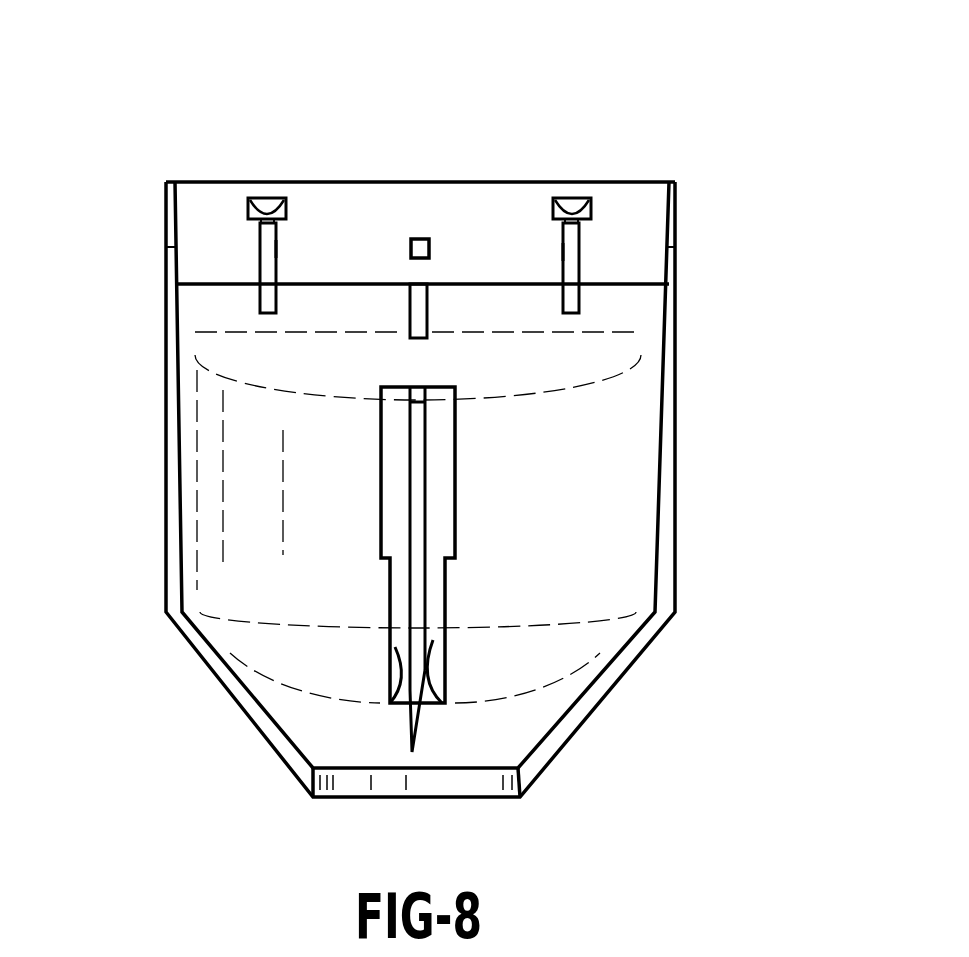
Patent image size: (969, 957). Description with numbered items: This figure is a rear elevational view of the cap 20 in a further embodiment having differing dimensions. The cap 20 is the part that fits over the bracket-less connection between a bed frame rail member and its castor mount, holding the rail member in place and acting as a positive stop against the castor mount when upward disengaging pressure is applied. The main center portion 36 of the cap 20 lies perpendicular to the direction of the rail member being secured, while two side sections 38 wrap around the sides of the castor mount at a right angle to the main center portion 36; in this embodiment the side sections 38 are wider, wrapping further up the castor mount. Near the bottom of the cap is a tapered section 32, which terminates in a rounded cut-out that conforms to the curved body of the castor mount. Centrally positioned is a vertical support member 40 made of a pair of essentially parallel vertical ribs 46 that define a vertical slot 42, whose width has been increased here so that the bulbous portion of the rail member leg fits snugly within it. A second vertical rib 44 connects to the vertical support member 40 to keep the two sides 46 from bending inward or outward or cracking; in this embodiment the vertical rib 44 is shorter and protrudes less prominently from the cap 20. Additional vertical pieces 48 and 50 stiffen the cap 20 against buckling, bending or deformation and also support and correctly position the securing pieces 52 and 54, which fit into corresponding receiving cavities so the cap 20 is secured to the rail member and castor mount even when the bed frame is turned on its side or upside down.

The cap 20 is at (489, 143).
The tapered section 32 is at (290, 702).
The main center portion 36 is at (600, 428).
The side sections 38 is at (174, 432).
The vertical support member 40 is at (437, 502).
The vertical slot 42 is at (417, 578).
The second vertical rib 44 is at (420, 330).
The vertical ribs 46 is at (412, 752).
The vertical piece 48 is at (277, 249).
The vertical piece 50 is at (562, 252).
The securing piece 52 is at (266, 205).
The securing piece 54 is at (573, 207).